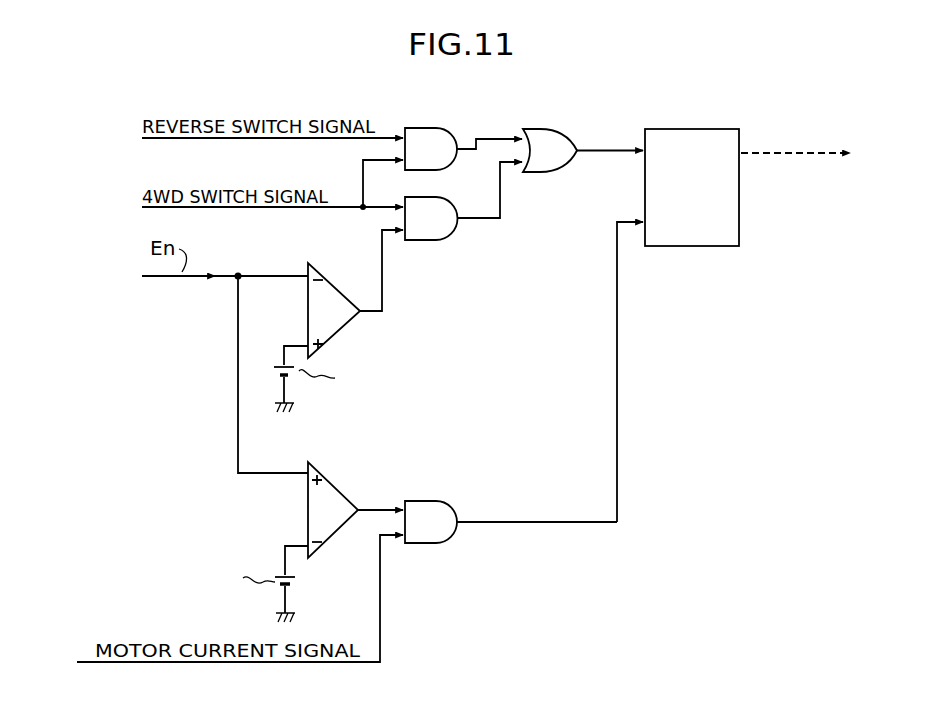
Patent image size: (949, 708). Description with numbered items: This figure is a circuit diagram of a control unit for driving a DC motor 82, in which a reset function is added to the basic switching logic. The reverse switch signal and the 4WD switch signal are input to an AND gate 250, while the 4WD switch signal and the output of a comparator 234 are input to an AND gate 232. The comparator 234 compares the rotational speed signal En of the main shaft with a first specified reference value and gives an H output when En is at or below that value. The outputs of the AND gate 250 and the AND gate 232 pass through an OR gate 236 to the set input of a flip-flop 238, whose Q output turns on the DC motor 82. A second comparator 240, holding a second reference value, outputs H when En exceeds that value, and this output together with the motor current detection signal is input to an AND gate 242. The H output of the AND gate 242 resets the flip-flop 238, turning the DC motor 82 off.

The AND gate 250 is at (426, 127).
The AND gate 232 is at (437, 241).
The OR gate 236 is at (546, 128).
The flip-flop 238 is at (681, 128).
The comparator 234 is at (332, 281).
The comparator 240 is at (328, 481).
The AND gate 242 is at (436, 500).
The DC motor 82 is at (843, 142).